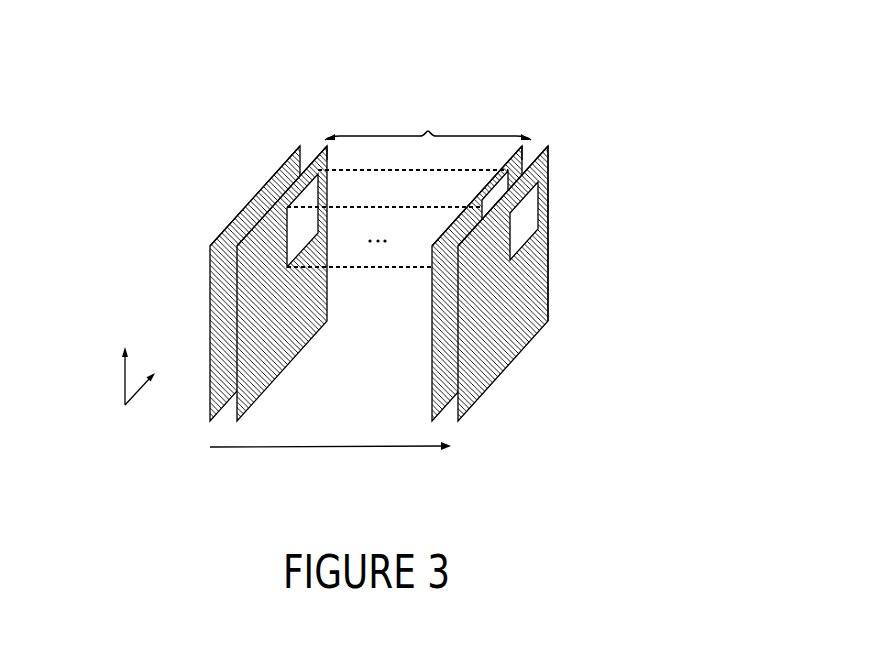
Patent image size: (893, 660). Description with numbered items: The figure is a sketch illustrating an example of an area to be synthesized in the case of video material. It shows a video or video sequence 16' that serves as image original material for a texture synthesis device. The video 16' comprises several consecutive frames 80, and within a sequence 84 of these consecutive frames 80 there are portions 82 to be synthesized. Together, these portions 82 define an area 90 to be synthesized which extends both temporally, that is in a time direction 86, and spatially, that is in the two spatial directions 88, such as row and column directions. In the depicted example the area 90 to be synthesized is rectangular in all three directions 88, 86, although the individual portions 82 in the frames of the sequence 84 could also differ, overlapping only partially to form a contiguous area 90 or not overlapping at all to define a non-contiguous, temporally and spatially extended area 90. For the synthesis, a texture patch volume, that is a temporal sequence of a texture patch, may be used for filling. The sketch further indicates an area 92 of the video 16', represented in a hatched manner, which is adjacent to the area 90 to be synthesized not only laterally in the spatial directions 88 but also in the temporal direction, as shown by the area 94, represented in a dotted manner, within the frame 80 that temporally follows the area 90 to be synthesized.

The video sequence 16' is at (402, 267).
The frames 80 is at (458, 390).
The portions to be synthesized 82 is at (505, 165).
The sequence of consecutive frames 84 is at (428, 118).
The time direction 86 is at (342, 447).
The spatial directions 88 is at (133, 386).
The area to be synthesized 90 is at (443, 170).
The adjacent area 92 is at (549, 153).
The temporally adjacent area 94 is at (550, 203).